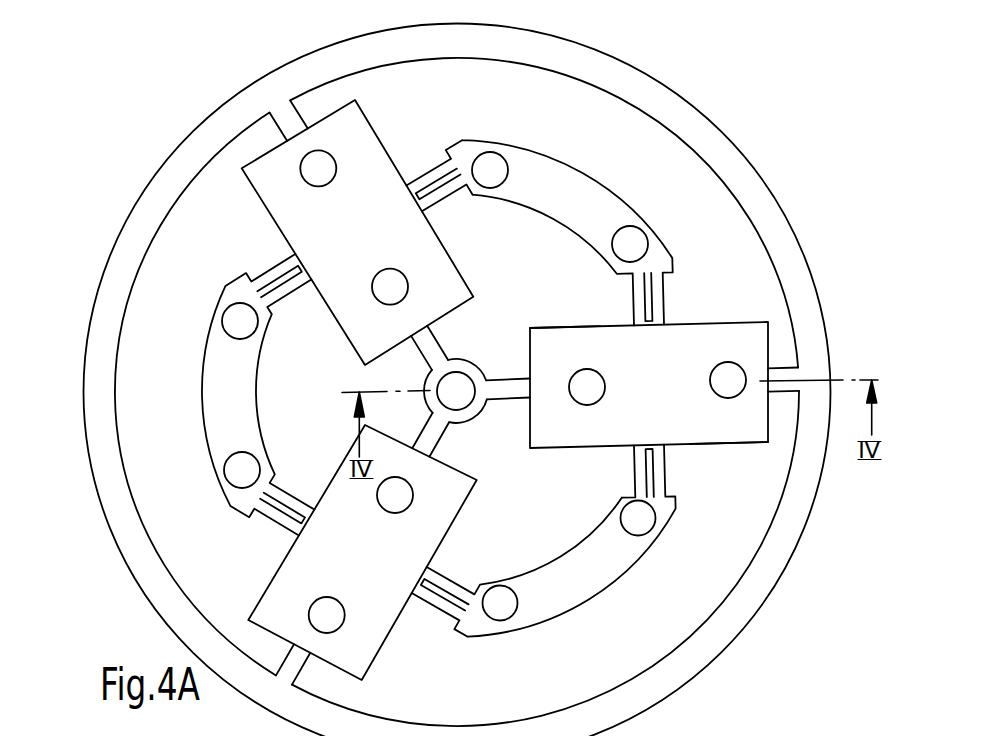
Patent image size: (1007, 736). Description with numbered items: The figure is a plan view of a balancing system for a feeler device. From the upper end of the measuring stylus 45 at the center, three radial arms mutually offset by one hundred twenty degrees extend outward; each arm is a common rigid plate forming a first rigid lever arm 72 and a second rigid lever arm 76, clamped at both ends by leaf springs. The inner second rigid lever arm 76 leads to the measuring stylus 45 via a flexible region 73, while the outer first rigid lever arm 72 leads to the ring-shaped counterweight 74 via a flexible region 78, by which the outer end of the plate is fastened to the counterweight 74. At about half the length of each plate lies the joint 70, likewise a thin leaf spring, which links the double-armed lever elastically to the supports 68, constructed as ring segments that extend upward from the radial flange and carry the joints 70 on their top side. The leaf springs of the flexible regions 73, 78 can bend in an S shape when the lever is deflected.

The measuring stylus 45 is at (462, 396).
The axial supports 68 is at (557, 190).
The joints 70 is at (647, 307).
The first rigid lever arms 72 is at (728, 446).
The flexible regions 73 is at (504, 388).
The counterweight 74 is at (670, 108).
The second rigid lever arms 76 is at (569, 327).
The flexible region 78 is at (778, 373).